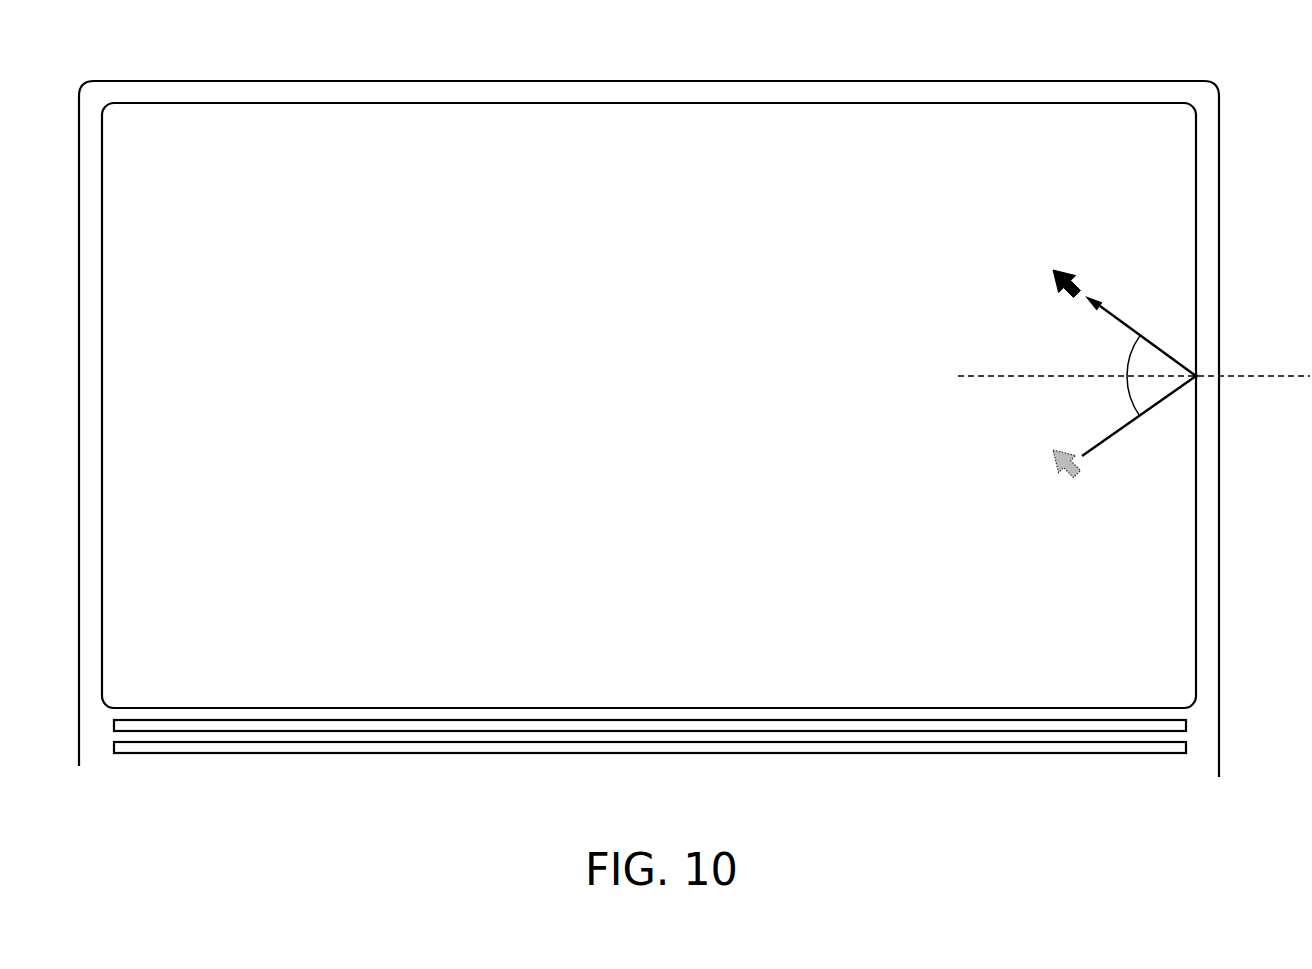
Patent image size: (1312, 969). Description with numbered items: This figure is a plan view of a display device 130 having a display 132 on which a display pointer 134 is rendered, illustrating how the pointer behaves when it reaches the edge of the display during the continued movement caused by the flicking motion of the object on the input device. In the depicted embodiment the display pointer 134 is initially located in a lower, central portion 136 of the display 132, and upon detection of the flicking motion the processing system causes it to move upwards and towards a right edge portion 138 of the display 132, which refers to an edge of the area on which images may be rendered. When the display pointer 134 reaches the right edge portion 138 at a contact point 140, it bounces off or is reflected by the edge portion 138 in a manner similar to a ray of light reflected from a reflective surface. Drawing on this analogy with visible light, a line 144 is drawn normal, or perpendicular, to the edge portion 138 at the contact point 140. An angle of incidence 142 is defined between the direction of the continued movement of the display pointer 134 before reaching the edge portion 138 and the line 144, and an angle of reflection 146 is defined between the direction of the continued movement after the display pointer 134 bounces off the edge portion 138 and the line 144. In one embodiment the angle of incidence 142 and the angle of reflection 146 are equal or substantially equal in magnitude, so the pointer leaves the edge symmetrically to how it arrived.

The display device 130 is at (795, 58).
The display 132 is at (478, 138).
The display pointer 134 is at (1068, 298).
The lower, central portion 136 is at (532, 673).
The right edge portion 138 is at (1197, 217).
The contact point 140 is at (1196, 376).
The angle of incidence 142 is at (1128, 396).
The line 144 is at (958, 376).
The angle of reflection 146 is at (1128, 352).